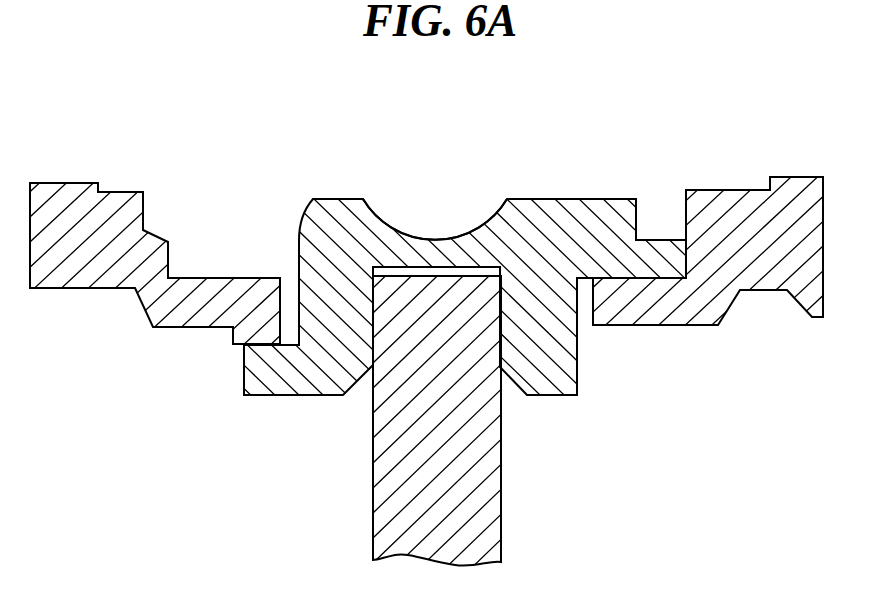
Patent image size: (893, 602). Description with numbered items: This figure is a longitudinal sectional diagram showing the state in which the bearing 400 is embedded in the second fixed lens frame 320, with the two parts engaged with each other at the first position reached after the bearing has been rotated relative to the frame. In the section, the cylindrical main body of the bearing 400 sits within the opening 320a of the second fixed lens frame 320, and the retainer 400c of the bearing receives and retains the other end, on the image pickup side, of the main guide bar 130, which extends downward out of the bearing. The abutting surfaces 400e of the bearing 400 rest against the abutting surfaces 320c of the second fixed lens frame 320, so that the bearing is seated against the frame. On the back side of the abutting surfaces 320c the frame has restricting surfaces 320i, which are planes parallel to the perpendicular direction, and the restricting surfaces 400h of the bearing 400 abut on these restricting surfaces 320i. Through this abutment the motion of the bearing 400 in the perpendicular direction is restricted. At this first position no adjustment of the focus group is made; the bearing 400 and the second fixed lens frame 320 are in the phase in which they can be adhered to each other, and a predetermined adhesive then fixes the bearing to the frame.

The second fixed lens frame 320 is at (727, 217).
The opening 320a is at (593, 303).
The abutting surface 320c is at (638, 278).
The restricting surface 320i is at (241, 345).
The bearing 400 is at (351, 231).
The retainer 400c is at (463, 258).
The abutting surface 400e is at (650, 278).
The restricting surface 400h is at (297, 342).
The main guide bar 130 is at (483, 538).